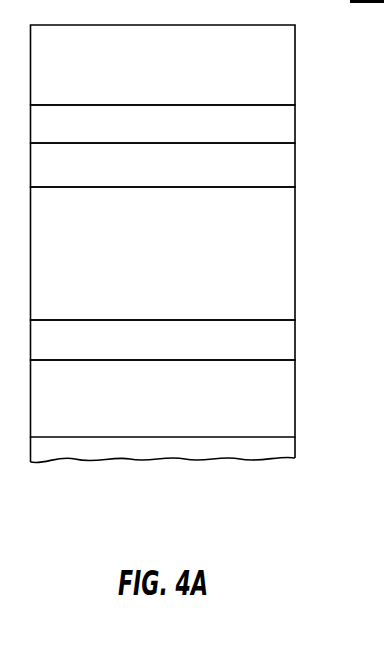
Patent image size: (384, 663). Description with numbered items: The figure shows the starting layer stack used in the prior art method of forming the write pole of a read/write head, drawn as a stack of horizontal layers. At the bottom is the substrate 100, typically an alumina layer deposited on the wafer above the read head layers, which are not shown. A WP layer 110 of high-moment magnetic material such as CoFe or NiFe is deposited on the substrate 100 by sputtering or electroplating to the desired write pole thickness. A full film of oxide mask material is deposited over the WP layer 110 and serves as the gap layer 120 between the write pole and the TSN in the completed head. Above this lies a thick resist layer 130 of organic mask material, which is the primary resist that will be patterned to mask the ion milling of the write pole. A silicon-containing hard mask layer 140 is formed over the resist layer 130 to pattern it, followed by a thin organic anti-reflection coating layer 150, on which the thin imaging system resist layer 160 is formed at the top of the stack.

The substrate 100 is at (283, 452).
The WP layer 110 is at (283, 398).
The gap layer 120 is at (283, 342).
The resist layer 130 is at (283, 248).
The silicon-containing hard mask layer 140 is at (283, 167).
The anti-reflection coating layer 150 is at (283, 123).
The thin imaging system resist layer 160 is at (283, 58).